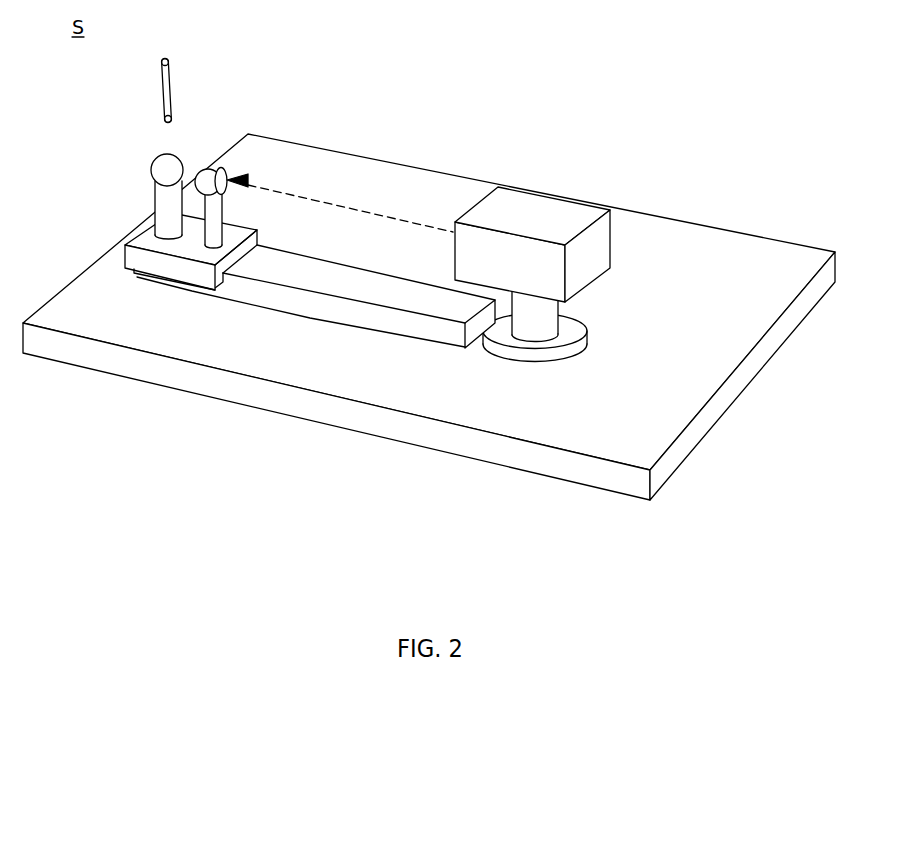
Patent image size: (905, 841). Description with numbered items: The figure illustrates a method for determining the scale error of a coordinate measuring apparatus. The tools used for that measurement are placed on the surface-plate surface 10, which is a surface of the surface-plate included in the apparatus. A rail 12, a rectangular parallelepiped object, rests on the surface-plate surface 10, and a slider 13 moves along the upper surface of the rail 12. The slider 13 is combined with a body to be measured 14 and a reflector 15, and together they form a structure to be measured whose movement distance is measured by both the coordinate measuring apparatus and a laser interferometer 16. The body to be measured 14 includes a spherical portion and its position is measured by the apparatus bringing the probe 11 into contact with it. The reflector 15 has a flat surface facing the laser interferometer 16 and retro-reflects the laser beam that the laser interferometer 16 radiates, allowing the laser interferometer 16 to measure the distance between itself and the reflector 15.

The surface-plate surface 10 is at (494, 462).
The probe 11 is at (171, 66).
The rail 12 is at (312, 318).
The slider 13 is at (127, 268).
The body to be measured 14 is at (174, 150).
The reflector 15 is at (232, 172).
The laser interferometer 16 is at (610, 249).